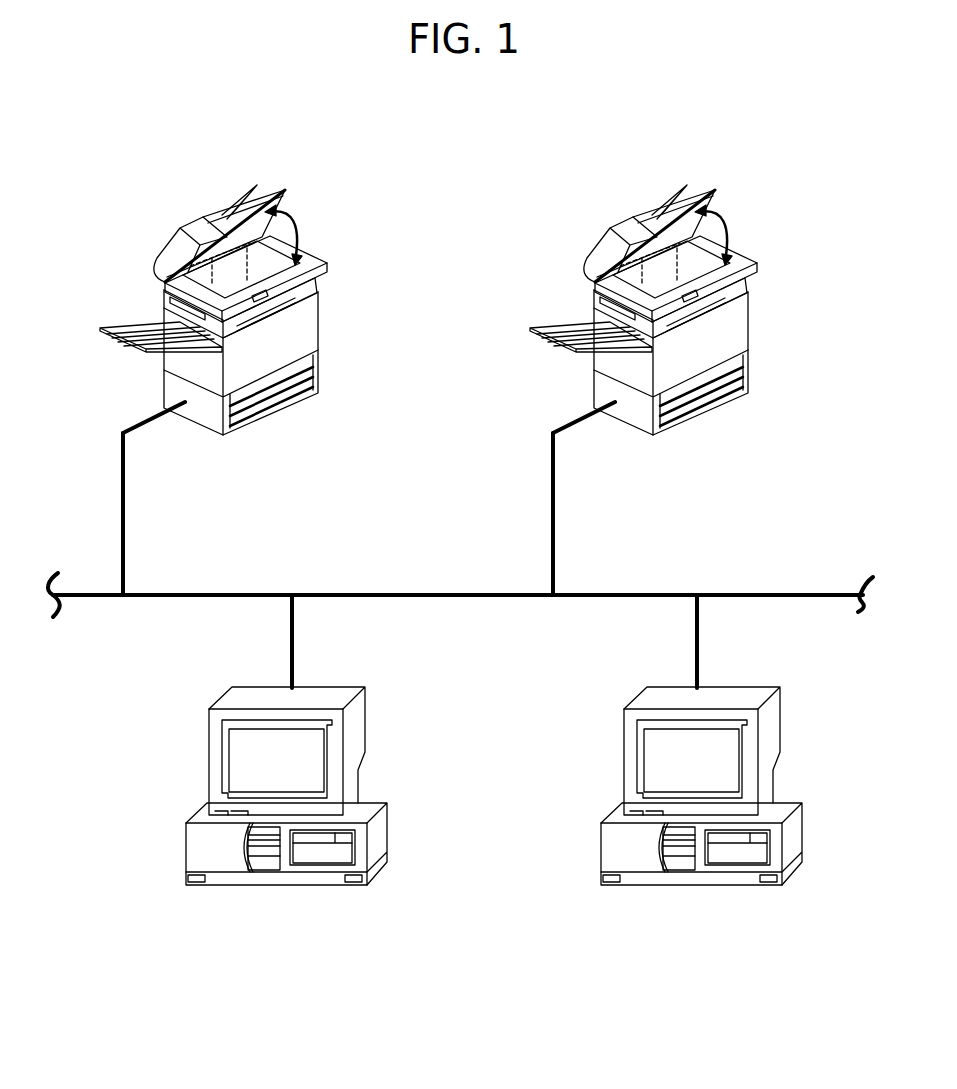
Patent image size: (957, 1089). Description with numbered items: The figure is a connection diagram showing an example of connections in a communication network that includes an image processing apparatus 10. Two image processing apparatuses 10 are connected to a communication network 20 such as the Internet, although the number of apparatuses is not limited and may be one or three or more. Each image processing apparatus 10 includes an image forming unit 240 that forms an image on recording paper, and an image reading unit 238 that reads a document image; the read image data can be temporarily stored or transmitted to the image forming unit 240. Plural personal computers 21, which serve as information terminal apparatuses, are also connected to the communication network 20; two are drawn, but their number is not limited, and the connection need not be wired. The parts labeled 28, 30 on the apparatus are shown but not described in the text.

The image processing apparatus 10 is at (311, 211).
The image reading unit 238 is at (330, 261).
The operation unit 28 is at (537, 301).
The display 30 is at (283, 299).
The image forming unit 240 is at (314, 314).
The communication network 20 is at (425, 593).
The personal computer 21 is at (372, 713).